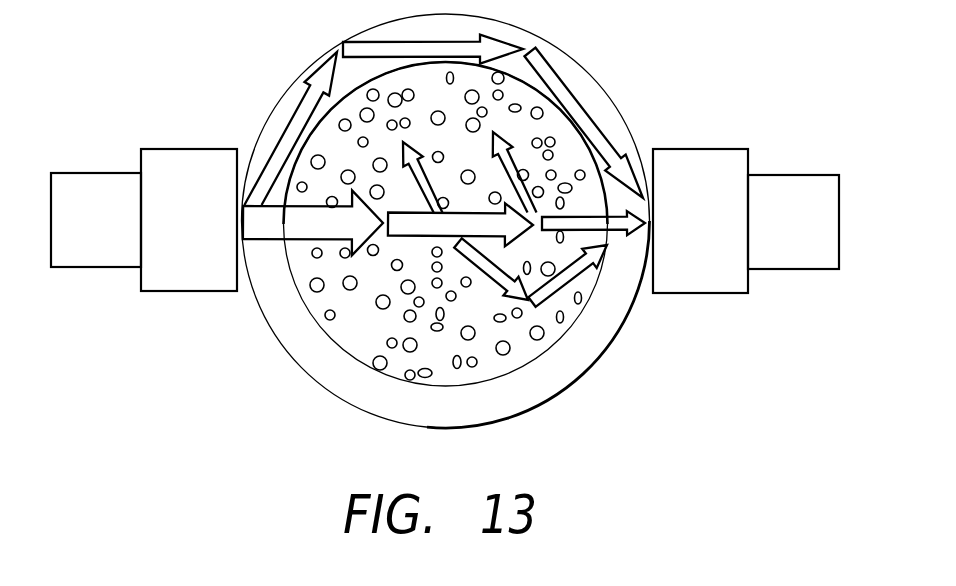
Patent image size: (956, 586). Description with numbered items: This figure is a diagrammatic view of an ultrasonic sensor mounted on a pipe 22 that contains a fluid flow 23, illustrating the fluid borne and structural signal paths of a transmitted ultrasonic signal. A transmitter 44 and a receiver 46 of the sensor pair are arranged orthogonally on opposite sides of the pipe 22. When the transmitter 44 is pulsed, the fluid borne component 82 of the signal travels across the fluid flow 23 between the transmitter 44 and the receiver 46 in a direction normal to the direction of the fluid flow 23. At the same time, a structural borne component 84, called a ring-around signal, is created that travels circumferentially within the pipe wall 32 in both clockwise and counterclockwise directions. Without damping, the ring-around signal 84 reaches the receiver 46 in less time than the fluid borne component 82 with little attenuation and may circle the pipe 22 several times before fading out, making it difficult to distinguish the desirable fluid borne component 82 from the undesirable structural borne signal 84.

The pipe 22 is at (295, 73).
The fluid flow 23 is at (364, 332).
The pipe wall 32 is at (563, 368).
The transmitter 44 is at (102, 172).
The receiver 46 is at (712, 148).
The fluid borne component 82 is at (607, 247).
The structural borne component 84 is at (582, 108).